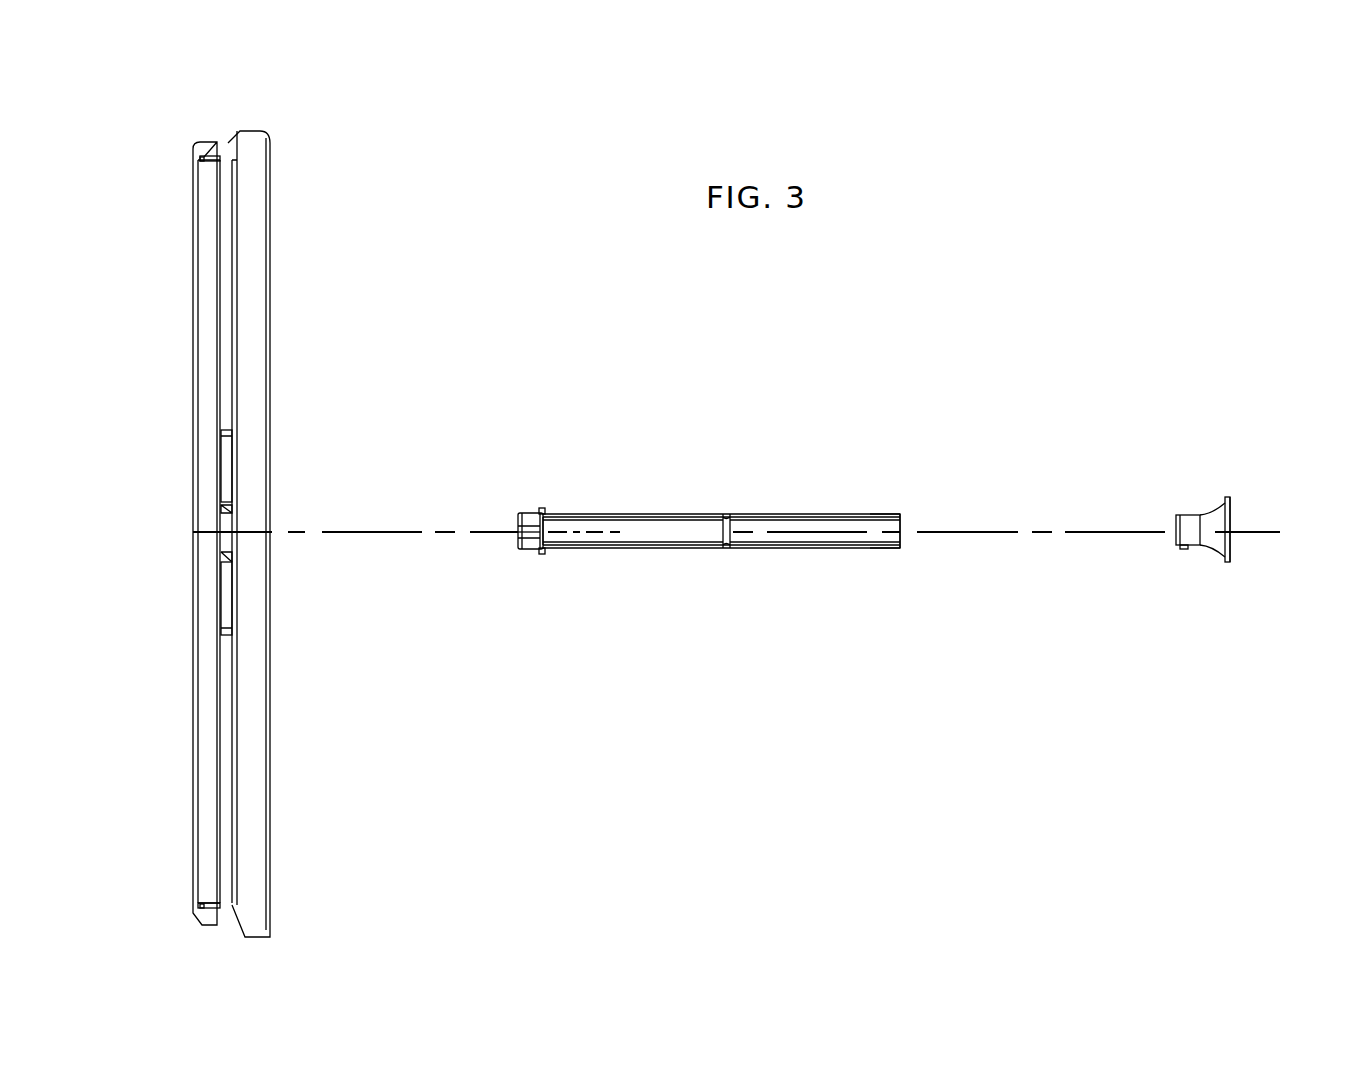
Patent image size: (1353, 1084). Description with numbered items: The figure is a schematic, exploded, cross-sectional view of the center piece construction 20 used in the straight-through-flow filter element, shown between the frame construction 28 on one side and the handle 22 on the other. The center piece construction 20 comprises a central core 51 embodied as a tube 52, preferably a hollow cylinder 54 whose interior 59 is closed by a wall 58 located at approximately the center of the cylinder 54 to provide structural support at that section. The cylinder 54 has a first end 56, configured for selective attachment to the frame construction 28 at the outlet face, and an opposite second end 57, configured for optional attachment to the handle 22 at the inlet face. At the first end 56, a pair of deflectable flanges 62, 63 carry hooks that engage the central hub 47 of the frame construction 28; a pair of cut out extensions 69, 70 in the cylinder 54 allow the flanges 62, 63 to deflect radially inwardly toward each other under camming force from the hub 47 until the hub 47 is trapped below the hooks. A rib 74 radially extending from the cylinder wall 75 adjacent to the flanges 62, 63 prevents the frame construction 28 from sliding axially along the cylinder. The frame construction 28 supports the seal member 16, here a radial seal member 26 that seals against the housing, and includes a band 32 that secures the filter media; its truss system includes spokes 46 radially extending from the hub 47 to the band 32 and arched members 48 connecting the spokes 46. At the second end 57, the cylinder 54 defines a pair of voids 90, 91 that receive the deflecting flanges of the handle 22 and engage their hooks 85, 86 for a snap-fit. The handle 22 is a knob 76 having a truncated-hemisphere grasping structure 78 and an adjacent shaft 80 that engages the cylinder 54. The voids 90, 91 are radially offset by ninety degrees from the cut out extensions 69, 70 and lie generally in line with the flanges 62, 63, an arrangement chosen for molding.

The seal member 16 is at (210, 150).
The center piece construction 20 is at (682, 460).
The handle 22 is at (1209, 472).
The radial seal member 26 is at (205, 143).
The frame construction 28 is at (205, 222).
The band 32 is at (255, 132).
The spokes 46 is at (240, 315).
The hub 47 is at (236, 567).
The arched members 48 is at (233, 432).
The central core 51 is at (820, 514).
The tube 52 is at (596, 550).
The hollow cylinder 54 is at (748, 550).
The first end 56 is at (520, 541).
The second end 57 is at (903, 540).
The wall 58 is at (728, 513).
The interior 59 is at (622, 517).
The deflectable flange 62 is at (524, 514).
The deflectable flange 63 is at (538, 552).
The cut out extension 69 is at (520, 528).
The cut out extension 70 is at (474, 512).
The rib 74 is at (546, 511).
The cylinder wall 75 is at (558, 550).
The knob 76 is at (1233, 549).
The grasping structure 78 is at (1232, 506).
The shaft 80 is at (1213, 549).
The hook 85 is at (1180, 513).
The hook 86 is at (1181, 547).
The void 90 is at (886, 513).
The void 91 is at (881, 550).